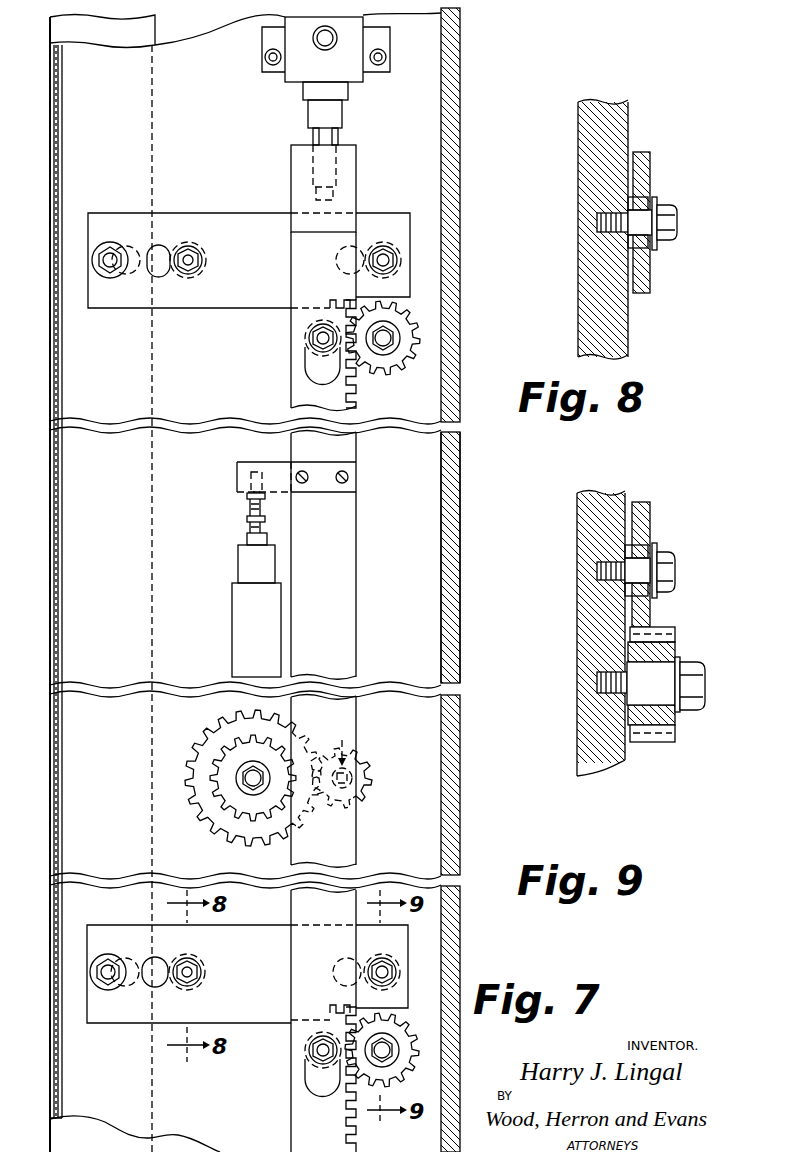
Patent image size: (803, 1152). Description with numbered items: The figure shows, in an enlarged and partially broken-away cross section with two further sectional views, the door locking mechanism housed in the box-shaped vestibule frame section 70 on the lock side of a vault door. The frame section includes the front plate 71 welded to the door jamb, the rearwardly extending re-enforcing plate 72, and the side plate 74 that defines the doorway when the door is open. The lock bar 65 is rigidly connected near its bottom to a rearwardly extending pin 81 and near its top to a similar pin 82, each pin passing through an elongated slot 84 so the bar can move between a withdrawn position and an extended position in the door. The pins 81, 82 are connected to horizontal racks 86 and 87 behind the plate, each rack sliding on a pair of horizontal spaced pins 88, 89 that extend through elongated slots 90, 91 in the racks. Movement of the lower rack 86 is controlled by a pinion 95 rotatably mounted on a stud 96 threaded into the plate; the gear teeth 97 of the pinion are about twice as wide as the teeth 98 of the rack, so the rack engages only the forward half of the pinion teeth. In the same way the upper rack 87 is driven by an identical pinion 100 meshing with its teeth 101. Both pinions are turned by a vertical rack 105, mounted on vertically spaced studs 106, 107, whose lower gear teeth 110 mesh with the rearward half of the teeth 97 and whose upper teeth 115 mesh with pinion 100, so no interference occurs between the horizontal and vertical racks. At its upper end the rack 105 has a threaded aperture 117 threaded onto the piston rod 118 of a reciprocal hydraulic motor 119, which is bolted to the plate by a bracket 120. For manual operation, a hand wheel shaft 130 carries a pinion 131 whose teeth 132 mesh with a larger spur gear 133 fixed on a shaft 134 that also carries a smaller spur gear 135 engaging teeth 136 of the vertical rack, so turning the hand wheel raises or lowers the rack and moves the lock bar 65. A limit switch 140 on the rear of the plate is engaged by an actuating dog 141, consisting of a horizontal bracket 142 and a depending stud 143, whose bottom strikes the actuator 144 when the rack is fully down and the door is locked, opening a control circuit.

In FIG. 7, the lock bar 65 is at (101, 33).
In FIG. 7, the vestibule frame section 70 is at (467, 520).
In FIG. 7, the front plate 71 is at (442, 570).
In FIG. 8, the front plate 71 is at (618, 330).
In FIG. 9, the front plate 71 is at (602, 755).
In FIG. 7, the re-enforcing plate 72 is at (460, 190).
In FIG. 7, the side plate 74 is at (62, 500).
In FIG. 7, the rearwardly extending pin 81 is at (104, 977).
In FIG. 7, the rearwardly extending pin 82 is at (103, 265).
In FIG. 7, the elongated slot 84 is at (131, 274).
In FIG. 7, the lower rack 86 is at (247, 974).
In FIG. 8, the lower rack 86 is at (650, 288).
In FIG. 9, the lower rack 86 is at (650, 616).
In FIG. 7, the upper rack 87 is at (249, 260).
In FIG. 7, the horizontal pin 88 is at (189, 985).
In FIG. 8, the horizontal pin 88 is at (647, 223).
In FIG. 7, the horizontal pin 89 is at (390, 968).
In FIG. 9, the horizontal pin 89 is at (643, 569).
In FIG. 7, the elongated slot 90 is at (161, 985).
In FIG. 7, the elongated slot 91 is at (333, 970).
In FIG. 7, the pinion 95 is at (402, 1027).
In FIG. 9, the pinion 95 is at (675, 720).
In FIG. 7, the stud 96 is at (386, 1048).
In FIG. 9, the stud 96 is at (663, 682).
In FIG. 7, the gear teeth 97 is at (407, 1066).
In FIG. 9, the gear teeth 97 is at (675, 633).
In FIG. 7, the teeth 98 is at (350, 1008).
In FIG. 7, the pinion 100 is at (403, 318).
In FIG. 7, the teeth 101 is at (358, 296).
In FIG. 7, the vertical rack 105 is at (297, 397).
In FIG. 7, the stud 106 is at (318, 340).
In FIG. 7, the stud 107 is at (317, 1052).
In FIG. 7, the gear teeth 110 is at (350, 1097).
In FIG. 7, the teeth 115 is at (350, 373).
In FIG. 7, the threaded aperture 117 is at (313, 168).
In FIG. 7, the piston rod 118 is at (308, 118).
In FIG. 7, the reciprocal hydraulic motor 119 is at (357, 77).
In FIG. 7, the bracket 120 is at (388, 38).
In FIG. 7, the shaft 130 is at (340, 742).
In FIG. 7, the pinion 131 is at (373, 778).
In FIG. 7, the teeth 132 is at (356, 758).
In FIG. 7, the spur gear 133 is at (273, 833).
In FIG. 7, the shaft 134 is at (248, 782).
In FIG. 7, the spur gear 135 is at (240, 798).
In FIG. 7, the teeth 136 is at (296, 812).
In FIG. 7, the limit switch 140 is at (261, 611).
In FIG. 7, the actuating dog 141 is at (232, 481).
In FIG. 7, the bracket 142 is at (273, 470).
In FIG. 7, the stud 143 is at (248, 509).
In FIG. 7, the actuator 144 is at (247, 537).